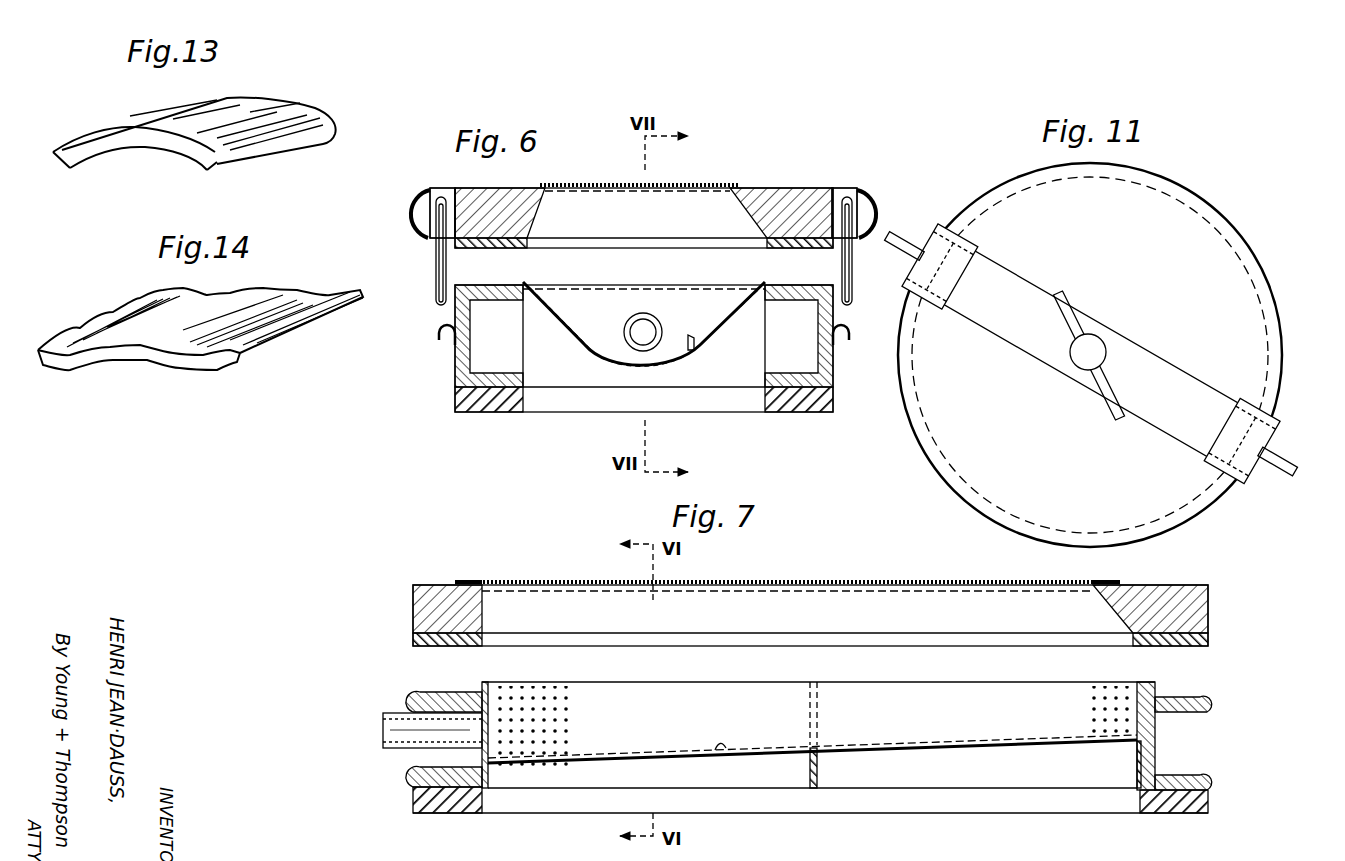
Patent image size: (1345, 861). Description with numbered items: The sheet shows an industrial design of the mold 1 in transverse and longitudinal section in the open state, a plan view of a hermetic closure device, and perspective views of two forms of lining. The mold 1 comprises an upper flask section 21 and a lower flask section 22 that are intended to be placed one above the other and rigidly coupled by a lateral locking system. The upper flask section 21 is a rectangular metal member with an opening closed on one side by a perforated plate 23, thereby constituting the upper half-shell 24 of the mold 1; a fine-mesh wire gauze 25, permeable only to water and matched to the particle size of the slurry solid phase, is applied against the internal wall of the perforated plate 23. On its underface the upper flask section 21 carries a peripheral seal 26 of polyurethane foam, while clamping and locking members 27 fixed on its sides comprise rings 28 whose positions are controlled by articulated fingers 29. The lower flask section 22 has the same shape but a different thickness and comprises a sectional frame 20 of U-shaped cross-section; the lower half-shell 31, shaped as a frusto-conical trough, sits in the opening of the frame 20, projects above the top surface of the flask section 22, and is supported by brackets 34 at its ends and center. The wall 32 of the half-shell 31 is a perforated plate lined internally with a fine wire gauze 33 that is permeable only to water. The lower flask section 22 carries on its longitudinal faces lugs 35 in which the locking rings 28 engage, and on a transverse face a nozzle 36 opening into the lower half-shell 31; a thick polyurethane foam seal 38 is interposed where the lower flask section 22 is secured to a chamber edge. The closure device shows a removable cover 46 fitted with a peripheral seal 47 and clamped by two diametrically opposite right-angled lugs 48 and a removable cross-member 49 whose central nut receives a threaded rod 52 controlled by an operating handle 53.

In FIG. 6, the mold 1 is at (780, 152).
In FIG. 7, the mold 1 is at (416, 660).
In FIG. 6, the sectional frame 20 is at (822, 380).
In FIG. 7, the sectional frame 20 is at (809, 747).
In FIG. 6, the upper flask section 21 is at (785, 189).
In FIG. 7, the upper flask section 21 is at (423, 583).
In FIG. 6, the lower flask section 22 is at (452, 378).
In FIG. 7, the lower flask section 22 is at (1170, 694).
In FIG. 6, the perforated plate 23 is at (702, 185).
In FIG. 7, the perforated plate 23 is at (757, 583).
In FIG. 6, the upper half-shell 24 is at (576, 203).
In FIG. 7, the upper half-shell 24 is at (608, 597).
In FIG. 6, the fine-mesh wire gauze 25 is at (644, 192).
In FIG. 7, the fine-mesh wire gauze 25 is at (890, 592).
In FIG. 6, the peripheral seal 26 is at (490, 248).
In FIG. 7, the peripheral seal 26 is at (441, 648).
In FIG. 6, the clamping and locking members 27 is at (441, 196).
In FIG. 6, the rings 28 is at (436, 262).
In FIG. 6, the articulated fingers 29 is at (411, 224).
In FIG. 6, the lower half-shell 31 is at (645, 290).
In FIG. 7, the lower half-shell 31 is at (862, 697).
In FIG. 6, the wall 32 is at (705, 330).
In FIG. 7, the wall 32 is at (880, 750).
In FIG. 6, the wire gauze 33 is at (690, 340).
In FIG. 7, the wire gauze 33 is at (719, 750).
In FIG. 7, the brackets 34 is at (490, 778).
In FIG. 6, the lugs 35 is at (432, 328).
In FIG. 6, the nozzle 36 is at (655, 316).
In FIG. 7, the nozzle 36 is at (395, 749).
In FIG. 6, the seal 38 is at (833, 398).
In FIG. 7, the seal 38 is at (1210, 801).
In FIG. 11, the removable cover 46 is at (1183, 232).
In FIG. 11, the peripheral seal 47 is at (1262, 322).
In FIG. 11, the right-angled lugs 48 is at (962, 243).
In FIG. 11, the removable cross-member 49 is at (1156, 424).
In FIG. 11, the threaded rod 52 is at (1100, 355).
In FIG. 11, the operating handle 53 is at (1070, 305).